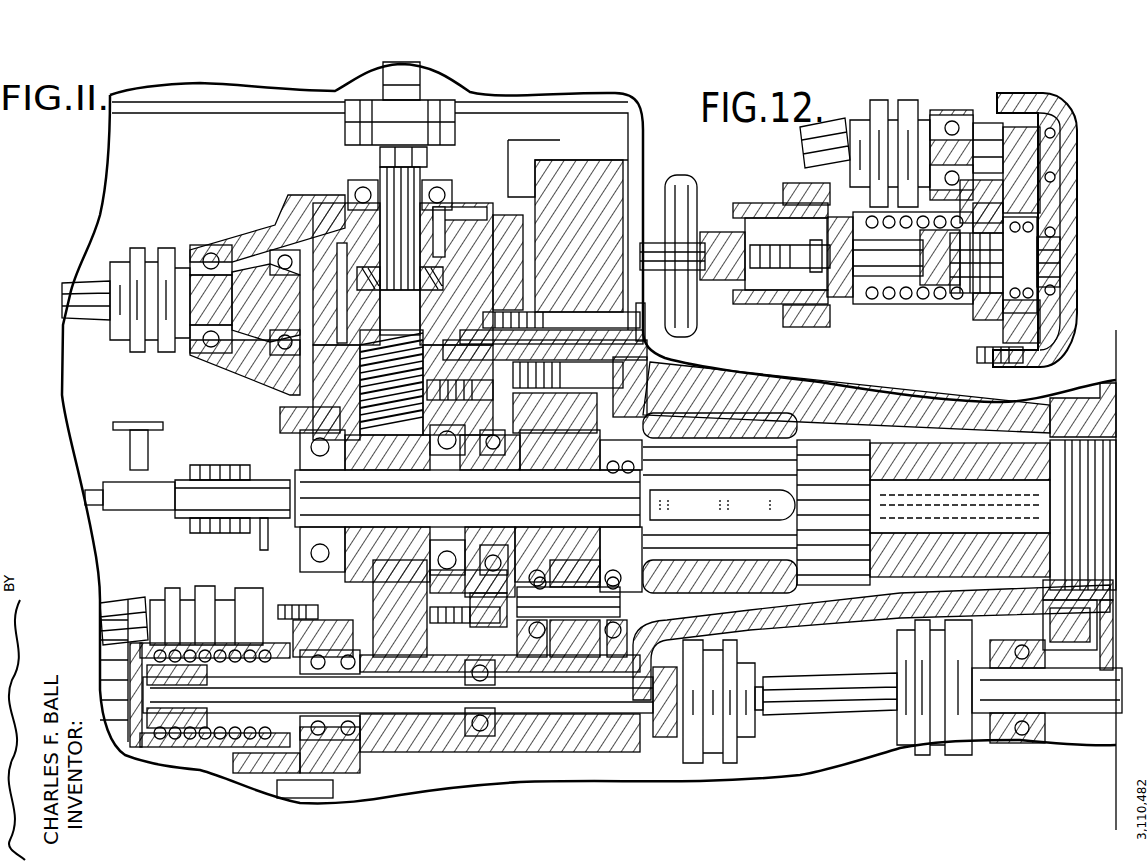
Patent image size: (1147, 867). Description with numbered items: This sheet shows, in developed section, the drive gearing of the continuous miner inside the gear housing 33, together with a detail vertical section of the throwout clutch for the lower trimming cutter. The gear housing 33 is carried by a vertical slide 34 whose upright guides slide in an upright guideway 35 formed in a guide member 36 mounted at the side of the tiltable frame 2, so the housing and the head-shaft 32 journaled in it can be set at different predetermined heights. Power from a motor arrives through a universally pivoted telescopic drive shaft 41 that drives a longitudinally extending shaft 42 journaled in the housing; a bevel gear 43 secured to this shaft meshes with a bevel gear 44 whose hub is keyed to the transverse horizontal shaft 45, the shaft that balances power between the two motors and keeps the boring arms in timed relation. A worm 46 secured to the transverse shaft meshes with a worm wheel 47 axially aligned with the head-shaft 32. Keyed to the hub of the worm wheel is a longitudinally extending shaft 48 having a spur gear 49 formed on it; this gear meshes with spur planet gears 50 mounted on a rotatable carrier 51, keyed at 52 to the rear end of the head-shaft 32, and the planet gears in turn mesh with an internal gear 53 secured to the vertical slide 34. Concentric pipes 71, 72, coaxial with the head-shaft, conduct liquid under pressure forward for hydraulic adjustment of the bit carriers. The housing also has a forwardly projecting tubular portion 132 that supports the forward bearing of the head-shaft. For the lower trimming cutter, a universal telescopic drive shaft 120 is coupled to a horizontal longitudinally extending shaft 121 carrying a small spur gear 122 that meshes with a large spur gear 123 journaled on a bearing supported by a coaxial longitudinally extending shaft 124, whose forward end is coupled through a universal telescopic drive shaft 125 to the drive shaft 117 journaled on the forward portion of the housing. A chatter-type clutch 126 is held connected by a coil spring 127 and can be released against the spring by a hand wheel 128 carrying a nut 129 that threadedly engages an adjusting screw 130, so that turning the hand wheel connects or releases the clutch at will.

In FIG. 11, the tiltable frame 2 is at (478, 112).
In FIG. 11, the head-shaft 32 is at (902, 450).
In FIG. 11, the gear housing 33 is at (572, 755).
In FIG. 11, the vertical slide 34 is at (640, 180).
In FIG. 11, the upright guideway 35 is at (562, 158).
In FIG. 11, the guide member 36 is at (520, 188).
In FIG. 11, the universally pivoted telescopic drive shaft 41 is at (78, 292).
In FIG. 11, the longitudinally extending shaft 42 is at (210, 296).
In FIG. 11, the bevel gear 43 is at (318, 248).
In FIG. 11, the bevel gear 44 is at (352, 228).
In FIG. 11, the transverse horizontal shaft 45 is at (380, 76).
In FIG. 11, the worm 46 is at (300, 352).
In FIG. 11, the worm wheel 47 is at (302, 422).
In FIG. 11, the longitudinally extending shaft 48 is at (592, 425).
In FIG. 11, the spur gear 49 is at (633, 413).
In FIG. 11, the spur planet gear 50 is at (577, 642).
In FIG. 11, the rotatable support or carrier 51 is at (650, 423).
In FIG. 11, the key 52 is at (748, 505).
In FIG. 11, the internal gear 53 is at (555, 330).
In FIG. 11, the concentric pipe 71 is at (214, 472).
In FIG. 11, the concentric pipe 72 is at (235, 520).
In FIG. 11, the drive shaft 117 is at (1083, 680).
In FIG. 11, the universal telescopic drive shaft 120 is at (103, 643).
In FIG. 12, the universal telescopic drive shaft 120 is at (818, 130).
In FIG. 12, the horizontal longitudinally extending shaft 121 is at (985, 150).
In FIG. 12, the small spur gear 122 is at (1022, 143).
In FIG. 11, the large spur gear 123 is at (325, 750).
In FIG. 12, the large spur gear 123 is at (1022, 205).
In FIG. 11, the longitudinally extending shaft 124 is at (425, 697).
In FIG. 12, the longitudinally extending shaft 124 is at (1035, 260).
In FIG. 11, the universal telescopic drive shaft 125 is at (828, 690).
In FIG. 11, the clutch 126 is at (292, 612).
In FIG. 12, the clutch 126 is at (1003, 327).
In FIG. 11, the coil spring 127 is at (195, 742).
In FIG. 12, the coil spring 127 is at (918, 300).
In FIG. 12, the hand wheel 128 is at (684, 185).
In FIG. 12, the nut 129 is at (705, 248).
In FIG. 12, the adjusting screw 130 is at (730, 250).
In FIG. 11, the forwardly projecting tubular portion 132 is at (800, 384).